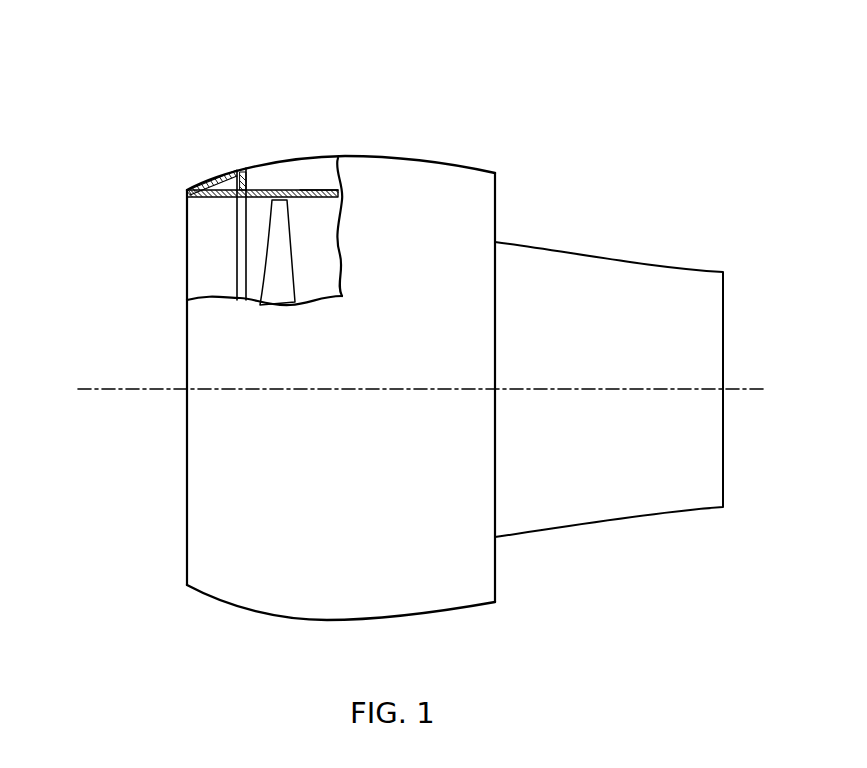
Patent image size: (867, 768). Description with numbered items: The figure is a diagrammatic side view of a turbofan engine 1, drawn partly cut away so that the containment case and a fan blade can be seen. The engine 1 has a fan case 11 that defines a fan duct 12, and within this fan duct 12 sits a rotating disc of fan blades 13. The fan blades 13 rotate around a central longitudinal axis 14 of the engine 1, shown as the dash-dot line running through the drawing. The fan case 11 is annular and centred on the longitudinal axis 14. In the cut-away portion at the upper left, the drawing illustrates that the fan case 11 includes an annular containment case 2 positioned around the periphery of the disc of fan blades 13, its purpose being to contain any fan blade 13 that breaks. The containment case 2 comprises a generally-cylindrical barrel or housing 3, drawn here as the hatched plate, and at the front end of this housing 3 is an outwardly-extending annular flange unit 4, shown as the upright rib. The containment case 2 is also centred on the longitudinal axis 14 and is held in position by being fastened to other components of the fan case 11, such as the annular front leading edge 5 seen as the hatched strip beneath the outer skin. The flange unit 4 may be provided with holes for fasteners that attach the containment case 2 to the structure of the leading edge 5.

The turbofan engine 1 is at (399, 325).
The containment case 2 is at (306, 190).
The barrel or housing 3 is at (322, 190).
The flange unit 4 is at (247, 178).
The front leading edge 5 is at (214, 178).
The fan case 11 is at (413, 160).
The fan duct 12 is at (153, 277).
The fan blades 13 is at (278, 238).
The longitudinal axis 14 is at (149, 391).